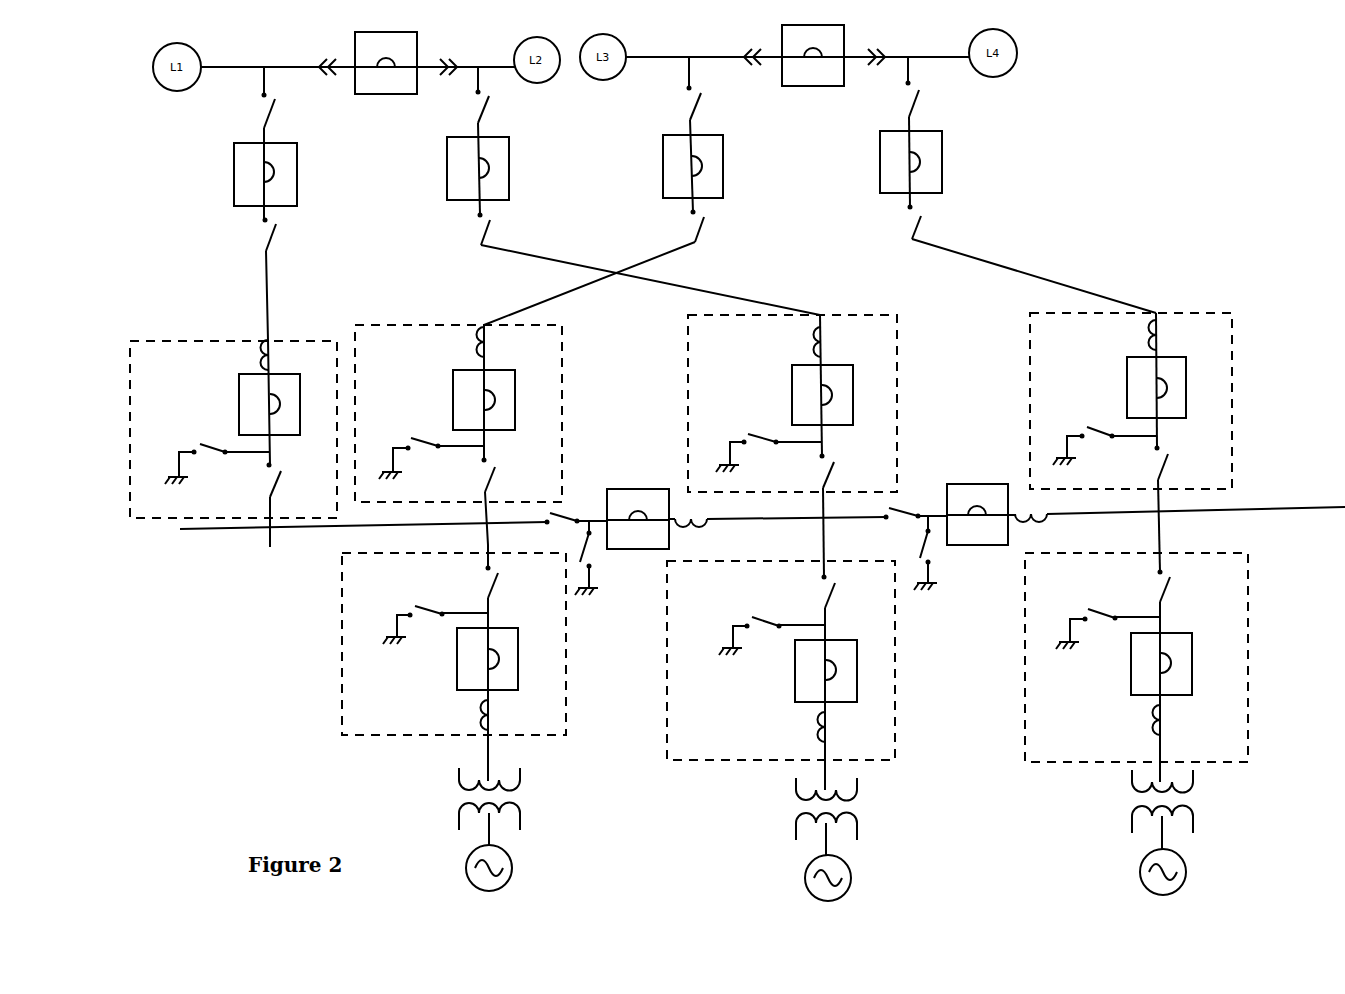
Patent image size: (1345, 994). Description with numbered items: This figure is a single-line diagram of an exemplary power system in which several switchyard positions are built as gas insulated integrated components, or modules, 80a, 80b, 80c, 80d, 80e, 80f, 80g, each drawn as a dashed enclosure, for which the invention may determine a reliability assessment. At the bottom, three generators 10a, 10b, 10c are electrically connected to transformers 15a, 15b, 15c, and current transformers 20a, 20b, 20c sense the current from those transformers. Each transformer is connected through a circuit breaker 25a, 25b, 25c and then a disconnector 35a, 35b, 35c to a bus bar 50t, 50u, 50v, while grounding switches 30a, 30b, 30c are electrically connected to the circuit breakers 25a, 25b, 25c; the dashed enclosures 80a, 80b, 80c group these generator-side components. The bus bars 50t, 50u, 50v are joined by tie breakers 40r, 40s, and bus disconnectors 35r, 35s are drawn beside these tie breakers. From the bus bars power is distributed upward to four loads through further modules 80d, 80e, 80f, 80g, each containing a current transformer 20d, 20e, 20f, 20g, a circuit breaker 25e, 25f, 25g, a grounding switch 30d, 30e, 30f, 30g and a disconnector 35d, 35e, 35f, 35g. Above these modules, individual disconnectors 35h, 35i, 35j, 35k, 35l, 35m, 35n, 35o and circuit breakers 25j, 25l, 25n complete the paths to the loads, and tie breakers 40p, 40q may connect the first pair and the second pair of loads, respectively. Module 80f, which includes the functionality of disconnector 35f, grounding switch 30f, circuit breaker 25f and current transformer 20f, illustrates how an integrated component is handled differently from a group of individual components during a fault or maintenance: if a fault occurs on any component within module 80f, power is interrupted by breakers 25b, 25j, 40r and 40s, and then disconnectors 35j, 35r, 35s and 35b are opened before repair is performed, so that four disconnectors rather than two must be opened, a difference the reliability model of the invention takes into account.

The generator 10a is at (512, 876).
The generator 10b is at (851, 878).
The generator 10c is at (1188, 877).
The transformer 15a is at (520, 805).
The transformer 15b is at (858, 792).
The transformer 15c is at (1193, 785).
The current transformer 20a is at (494, 714).
The current transformer 20b is at (832, 724).
The current transformer 20c is at (1167, 717).
The current transformer 20d is at (275, 352).
The current transformer 20e is at (488, 348).
The current transformer 20f is at (827, 341).
The current transformer 20g is at (1162, 335).
The circuit breaker 25a is at (518, 665).
The circuit breaker 25b is at (857, 670).
The circuit breaker 25c is at (1192, 662).
The circuit breaker 25e is at (453, 370).
The circuit breaker 25f is at (790, 365).
The circuit breaker 25g is at (1127, 357).
The circuit breaker 25j is at (510, 168).
The circuit breaker 25l is at (663, 166).
The circuit breaker 25n is at (943, 160).
The grounding switch 30a is at (428, 605).
The grounding switch 30b is at (763, 615).
The grounding switch 30c is at (1102, 610).
The grounding switch 30d is at (199, 443).
The grounding switch 30e is at (423, 437).
The grounding switch 30f is at (762, 433).
The grounding switch 30g is at (1100, 427).
The disconnector 35a is at (490, 580).
The disconnector 35b is at (828, 590).
The disconnector 35c is at (1167, 583).
The disconnector 35d is at (267, 482).
The disconnector 35e is at (493, 476).
The disconnector 35f is at (833, 471).
The disconnector 35g is at (1168, 465).
The disconnector 35h is at (265, 236).
The disconnector 35i is at (262, 112).
The disconnector 35j is at (486, 231).
The disconnector 35k is at (487, 107).
The disconnector 35l is at (698, 228).
The disconnector 35m is at (687, 104).
The disconnector 35n is at (918, 222).
The disconnector 35o is at (920, 98).
The disconnector 35r is at (566, 527).
The disconnector 35s is at (902, 517).
The tie breaker 40p is at (407, 94).
The tie breaker 40q is at (837, 86).
The tie breaker 40r is at (662, 489).
The tie breaker 40s is at (1000, 484).
The bus bar 50t is at (270, 545).
The bus bar 50u is at (735, 519).
The bus bar 50v is at (1308, 510).
The integrated component 80a is at (389, 735).
The integrated component 80b is at (738, 760).
The integrated component 80c is at (1077, 762).
The integrated component 80d is at (213, 341).
The integrated component 80e is at (442, 325).
The integrated component 80f is at (688, 347).
The integrated component 80g is at (1030, 317).